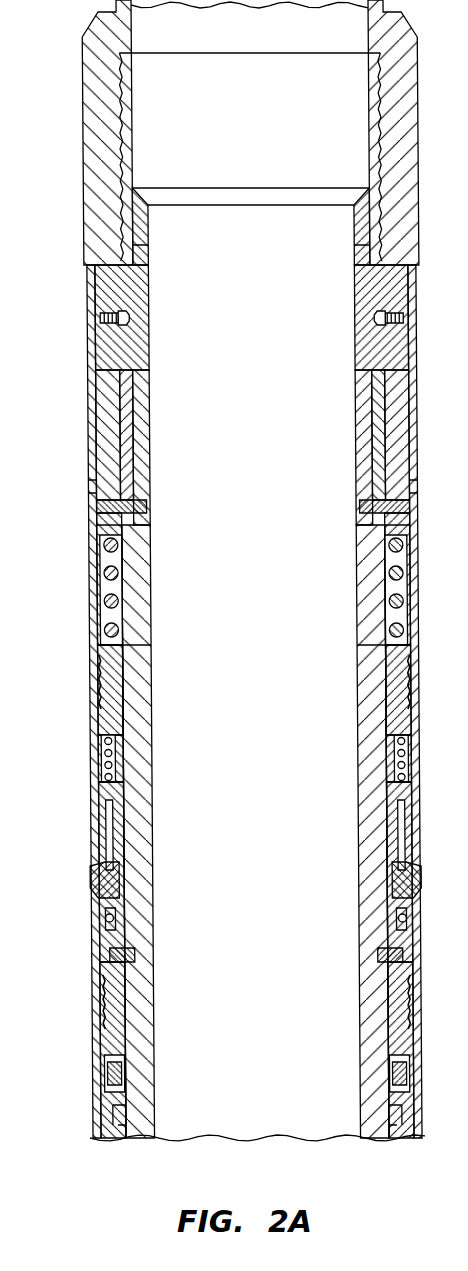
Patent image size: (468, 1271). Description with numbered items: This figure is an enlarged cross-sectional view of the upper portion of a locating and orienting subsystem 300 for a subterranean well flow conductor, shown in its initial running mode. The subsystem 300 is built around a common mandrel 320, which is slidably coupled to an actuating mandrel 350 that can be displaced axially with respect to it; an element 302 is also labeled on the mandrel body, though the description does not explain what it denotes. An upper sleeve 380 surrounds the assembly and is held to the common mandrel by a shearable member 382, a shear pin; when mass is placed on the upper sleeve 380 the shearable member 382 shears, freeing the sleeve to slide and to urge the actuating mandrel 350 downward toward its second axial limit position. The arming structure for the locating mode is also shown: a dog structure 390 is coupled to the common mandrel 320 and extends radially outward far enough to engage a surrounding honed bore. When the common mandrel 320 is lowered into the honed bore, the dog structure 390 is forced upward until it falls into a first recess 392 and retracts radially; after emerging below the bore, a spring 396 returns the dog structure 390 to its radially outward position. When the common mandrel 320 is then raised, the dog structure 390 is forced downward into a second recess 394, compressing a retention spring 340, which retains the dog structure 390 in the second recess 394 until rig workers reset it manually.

The locating and orienting subsystem 300 is at (244, 570).
The mandrel 302 is at (118, 668).
The common mandrel 320 is at (93, 702).
The retention spring 340 is at (96, 565).
The actuating mandrel 350 is at (418, 682).
The upper sleeve 380 is at (97, 413).
The shearable member 382 is at (93, 507).
The dog structure 390 is at (97, 838).
The first recess 392 is at (84, 872).
The second recess 394 is at (103, 920).
The spring 396 is at (96, 760).